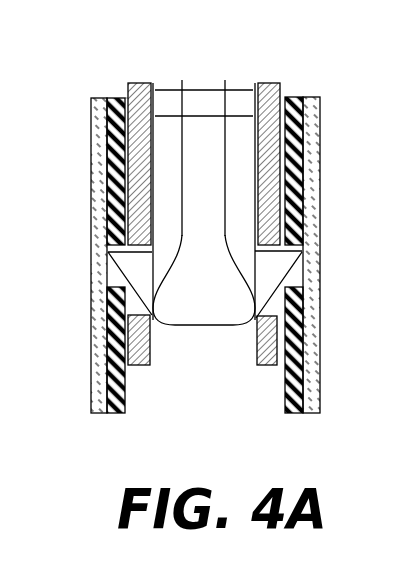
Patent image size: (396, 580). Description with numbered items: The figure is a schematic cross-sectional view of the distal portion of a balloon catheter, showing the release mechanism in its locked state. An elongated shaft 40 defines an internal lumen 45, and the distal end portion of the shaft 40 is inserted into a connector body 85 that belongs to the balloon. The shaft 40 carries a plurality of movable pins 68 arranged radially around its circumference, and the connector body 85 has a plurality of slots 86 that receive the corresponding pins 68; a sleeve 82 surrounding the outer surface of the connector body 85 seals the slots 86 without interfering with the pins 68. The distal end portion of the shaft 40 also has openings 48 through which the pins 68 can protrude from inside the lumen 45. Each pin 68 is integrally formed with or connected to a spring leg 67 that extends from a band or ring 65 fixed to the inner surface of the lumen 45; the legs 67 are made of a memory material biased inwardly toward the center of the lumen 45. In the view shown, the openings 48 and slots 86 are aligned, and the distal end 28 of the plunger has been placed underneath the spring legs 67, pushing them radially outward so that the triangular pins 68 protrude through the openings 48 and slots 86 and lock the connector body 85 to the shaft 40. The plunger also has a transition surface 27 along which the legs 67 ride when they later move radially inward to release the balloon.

The transition surface 27 is at (172, 262).
The distal end 28 is at (210, 305).
The elongated shaft 40 is at (283, 83).
The internal lumen 45 is at (233, 183).
The openings 48 is at (143, 268).
The band or ring 65 is at (237, 103).
The spring legs 67 is at (153, 157).
The movable pins 68 is at (140, 305).
The sleeve 82 is at (300, 352).
The connector body 85 is at (305, 212).
The slots 86 is at (292, 278).